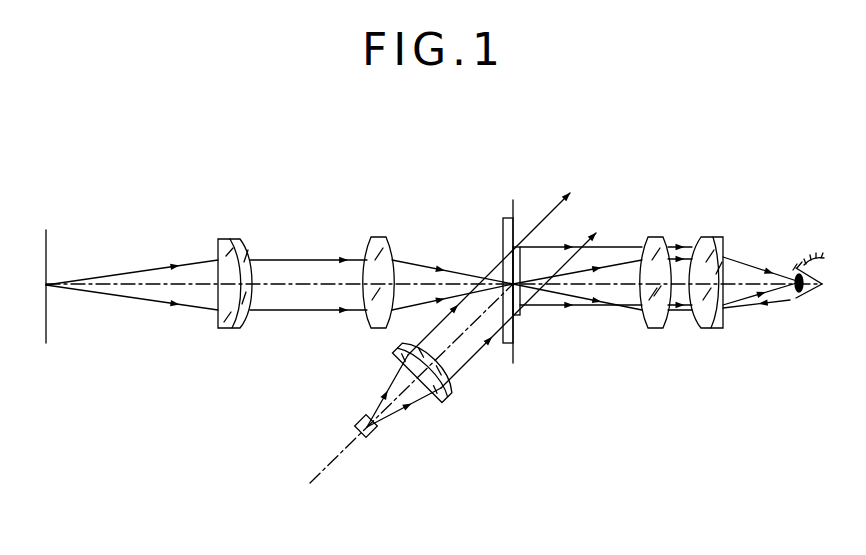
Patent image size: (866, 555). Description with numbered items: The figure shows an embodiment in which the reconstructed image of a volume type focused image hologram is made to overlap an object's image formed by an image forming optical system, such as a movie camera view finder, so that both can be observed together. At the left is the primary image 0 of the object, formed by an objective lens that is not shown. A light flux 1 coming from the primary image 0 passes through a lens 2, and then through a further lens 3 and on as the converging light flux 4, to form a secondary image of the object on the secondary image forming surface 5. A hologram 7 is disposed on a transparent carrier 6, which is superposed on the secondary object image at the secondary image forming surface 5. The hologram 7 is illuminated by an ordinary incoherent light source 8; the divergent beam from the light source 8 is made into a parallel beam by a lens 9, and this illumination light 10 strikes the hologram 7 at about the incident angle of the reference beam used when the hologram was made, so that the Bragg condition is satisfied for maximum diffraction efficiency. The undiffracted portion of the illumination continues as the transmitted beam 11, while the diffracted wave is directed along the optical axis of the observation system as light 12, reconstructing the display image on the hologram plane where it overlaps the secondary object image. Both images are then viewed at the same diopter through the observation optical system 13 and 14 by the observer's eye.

The primary image of the object 0 is at (46, 267).
The light flux 1 is at (131, 272).
The lens 2 is at (240, 240).
The focusing lens 3 is at (379, 239).
The converging light beam 4 is at (421, 265).
The secondary image forming surface 5 is at (514, 205).
The transparent carrier 6 is at (502, 229).
The hologram 7 is at (519, 316).
The incoherent light source 8 is at (375, 431).
The lens 9 is at (451, 394).
The illumination light 10 is at (464, 362).
The transmitted beam 11 is at (558, 205).
The observation beam 12 is at (552, 307).
The observation optical system 13 is at (652, 238).
The observation optical system 14 is at (714, 238).